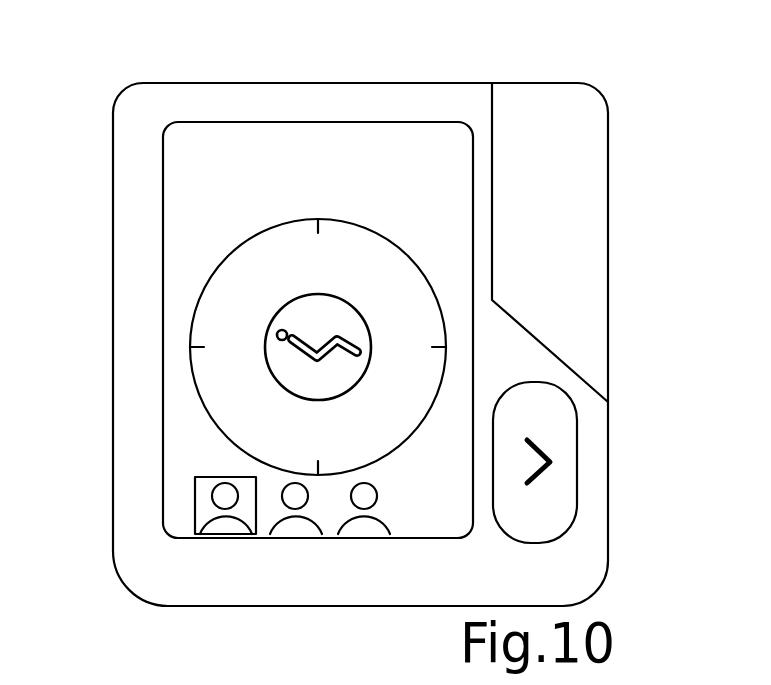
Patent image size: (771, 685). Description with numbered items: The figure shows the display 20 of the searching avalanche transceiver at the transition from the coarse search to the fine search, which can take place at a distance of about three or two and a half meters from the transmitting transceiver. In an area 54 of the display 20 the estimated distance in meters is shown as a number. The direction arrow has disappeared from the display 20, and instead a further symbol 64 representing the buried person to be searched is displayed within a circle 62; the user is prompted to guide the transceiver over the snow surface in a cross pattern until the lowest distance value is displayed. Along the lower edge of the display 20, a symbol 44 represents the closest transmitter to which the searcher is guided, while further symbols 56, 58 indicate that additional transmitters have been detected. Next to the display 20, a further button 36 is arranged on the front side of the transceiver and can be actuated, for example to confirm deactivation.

The display 20 is at (198, 225).
The area of the display 54 is at (402, 165).
The circle 62 is at (445, 326).
The further symbol 64 is at (342, 312).
The further button 36 is at (550, 422).
The symbol 44 is at (203, 507).
The further symbol 56 is at (293, 525).
The further symbol 58 is at (362, 523).